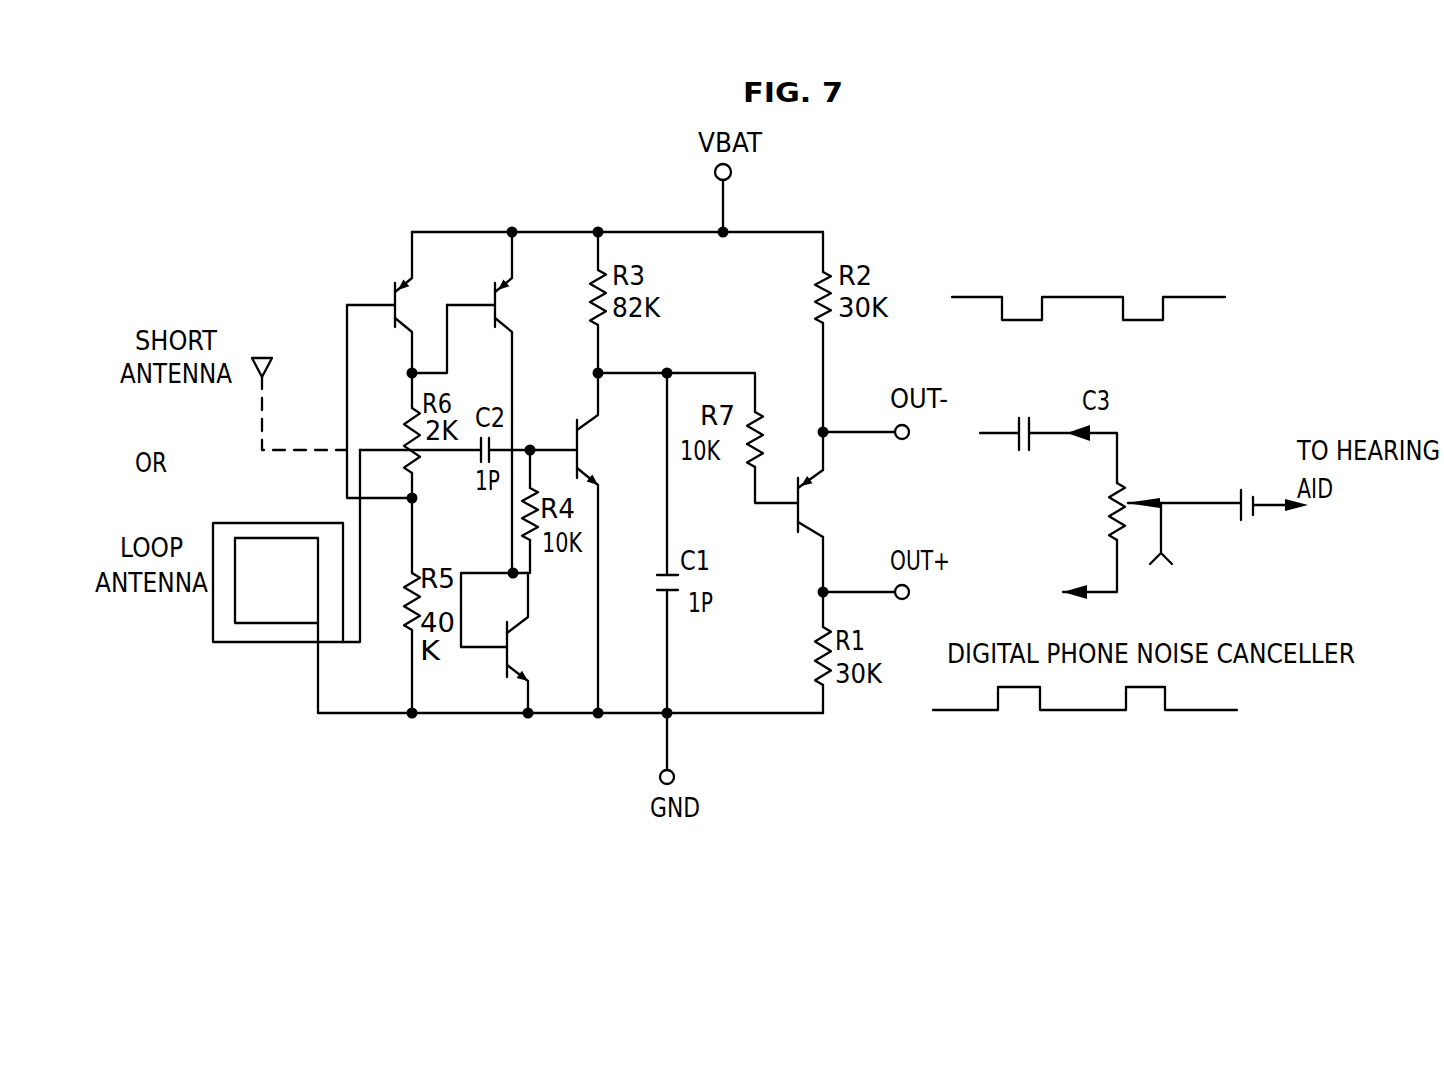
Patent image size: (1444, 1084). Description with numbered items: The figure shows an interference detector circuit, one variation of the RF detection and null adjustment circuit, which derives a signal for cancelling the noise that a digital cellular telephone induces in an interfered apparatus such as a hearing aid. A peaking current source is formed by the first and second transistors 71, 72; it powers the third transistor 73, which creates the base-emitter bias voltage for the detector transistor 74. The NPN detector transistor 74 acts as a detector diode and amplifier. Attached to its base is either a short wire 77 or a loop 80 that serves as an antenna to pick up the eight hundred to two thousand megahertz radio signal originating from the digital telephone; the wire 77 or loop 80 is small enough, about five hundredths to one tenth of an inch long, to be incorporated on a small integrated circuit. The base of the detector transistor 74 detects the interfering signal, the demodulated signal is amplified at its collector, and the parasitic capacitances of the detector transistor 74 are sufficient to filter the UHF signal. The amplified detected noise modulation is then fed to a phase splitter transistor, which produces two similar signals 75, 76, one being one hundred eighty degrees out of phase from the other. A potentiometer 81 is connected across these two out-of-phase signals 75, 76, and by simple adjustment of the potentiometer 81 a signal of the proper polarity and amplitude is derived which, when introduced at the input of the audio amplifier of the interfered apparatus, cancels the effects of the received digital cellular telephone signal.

The transistor Q1 of peaking current source 71 is at (395, 297).
The transistor Q2 of peaking current source 72 is at (495, 297).
The transistor Q3 73 is at (507, 667).
The transistor Q4 74 is at (577, 436).
The first phase splitter output signal 75 is at (798, 528).
The second phase splitter output signal 76 is at (1068, 710).
The short wire 77 is at (272, 362).
The loop 80 is at (225, 643).
The potentiometer 81 is at (1108, 510).